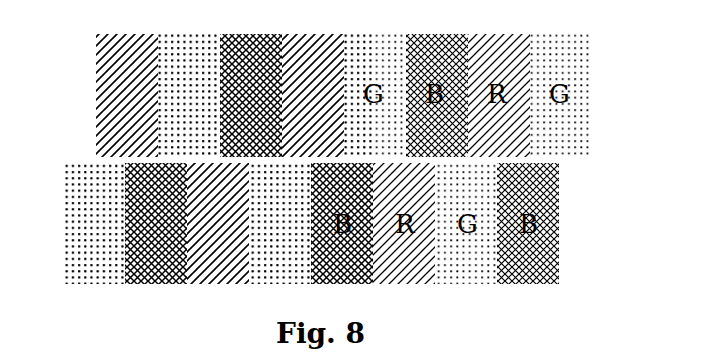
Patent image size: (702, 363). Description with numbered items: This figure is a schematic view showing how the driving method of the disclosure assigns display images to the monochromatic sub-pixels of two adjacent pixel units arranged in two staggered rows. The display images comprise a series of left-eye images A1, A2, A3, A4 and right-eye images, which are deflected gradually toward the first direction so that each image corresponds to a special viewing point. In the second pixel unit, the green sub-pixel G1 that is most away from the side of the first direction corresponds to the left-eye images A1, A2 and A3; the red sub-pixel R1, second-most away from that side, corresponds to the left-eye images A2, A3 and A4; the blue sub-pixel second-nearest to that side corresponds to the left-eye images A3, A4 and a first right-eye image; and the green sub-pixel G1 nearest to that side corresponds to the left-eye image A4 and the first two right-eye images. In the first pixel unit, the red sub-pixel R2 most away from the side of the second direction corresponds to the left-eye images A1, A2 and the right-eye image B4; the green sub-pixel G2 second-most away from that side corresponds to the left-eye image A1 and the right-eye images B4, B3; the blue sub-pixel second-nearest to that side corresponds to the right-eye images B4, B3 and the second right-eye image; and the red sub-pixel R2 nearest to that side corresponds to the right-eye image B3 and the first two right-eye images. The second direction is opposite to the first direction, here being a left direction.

The left-eye image A1 is at (195, 159).
The left-eye image A2 is at (226, 159).
The left-eye image A3 is at (135, 159).
The left-eye image A4 is at (166, 159).
The right-eye image B3 is at (262, 159).
The right-eye image B4 is at (292, 159).
The monochromatic red sub-pixel R1 is at (127, 95).
The monochromatic red sub-pixel R2 is at (265, 159).
The monochromatic green sub-pixel G1 is at (141, 159).
The monochromatic green sub-pixel G2 is at (280, 223).